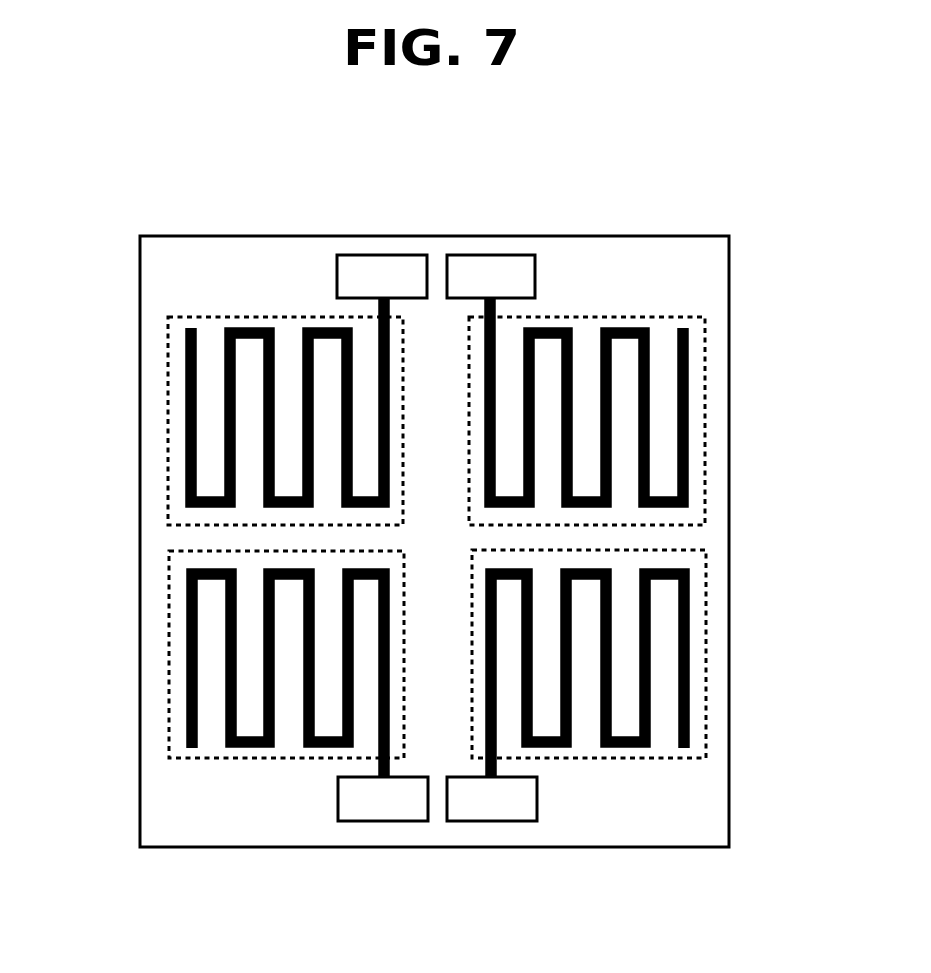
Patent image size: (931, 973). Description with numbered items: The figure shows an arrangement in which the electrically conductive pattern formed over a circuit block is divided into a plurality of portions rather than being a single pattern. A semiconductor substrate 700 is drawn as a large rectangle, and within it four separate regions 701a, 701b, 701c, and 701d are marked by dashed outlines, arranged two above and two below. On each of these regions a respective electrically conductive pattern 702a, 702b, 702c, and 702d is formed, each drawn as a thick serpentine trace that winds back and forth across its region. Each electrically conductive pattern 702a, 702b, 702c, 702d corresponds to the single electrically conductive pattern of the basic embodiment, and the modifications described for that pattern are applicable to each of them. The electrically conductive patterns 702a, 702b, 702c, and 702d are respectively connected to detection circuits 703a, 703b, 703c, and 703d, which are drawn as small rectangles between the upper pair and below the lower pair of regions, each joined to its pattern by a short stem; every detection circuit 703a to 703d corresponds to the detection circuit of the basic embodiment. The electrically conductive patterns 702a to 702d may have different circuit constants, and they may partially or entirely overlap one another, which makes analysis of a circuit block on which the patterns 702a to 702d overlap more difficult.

The semiconductor substrate 700 is at (660, 236).
The region 701a is at (168, 433).
The region 701b is at (704, 422).
The region 701c is at (168, 632).
The region 701d is at (706, 617).
The electrically conductive pattern 702a is at (237, 328).
The electrically conductive pattern 702b is at (615, 328).
The electrically conductive pattern 702c is at (255, 748).
The electrically conductive pattern 702d is at (628, 750).
The detection circuit 703a is at (380, 255).
The detection circuit 703b is at (493, 255).
The detection circuit 703c is at (380, 822).
The detection circuit 703d is at (502, 822).